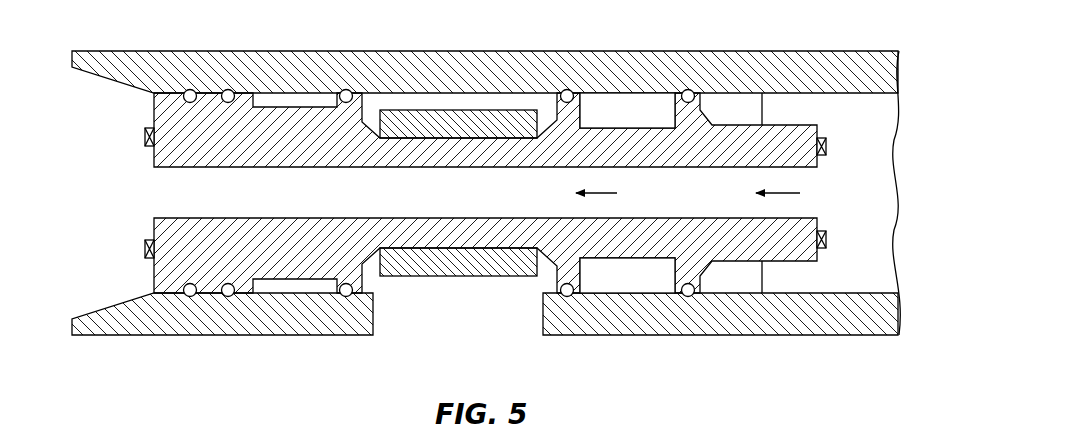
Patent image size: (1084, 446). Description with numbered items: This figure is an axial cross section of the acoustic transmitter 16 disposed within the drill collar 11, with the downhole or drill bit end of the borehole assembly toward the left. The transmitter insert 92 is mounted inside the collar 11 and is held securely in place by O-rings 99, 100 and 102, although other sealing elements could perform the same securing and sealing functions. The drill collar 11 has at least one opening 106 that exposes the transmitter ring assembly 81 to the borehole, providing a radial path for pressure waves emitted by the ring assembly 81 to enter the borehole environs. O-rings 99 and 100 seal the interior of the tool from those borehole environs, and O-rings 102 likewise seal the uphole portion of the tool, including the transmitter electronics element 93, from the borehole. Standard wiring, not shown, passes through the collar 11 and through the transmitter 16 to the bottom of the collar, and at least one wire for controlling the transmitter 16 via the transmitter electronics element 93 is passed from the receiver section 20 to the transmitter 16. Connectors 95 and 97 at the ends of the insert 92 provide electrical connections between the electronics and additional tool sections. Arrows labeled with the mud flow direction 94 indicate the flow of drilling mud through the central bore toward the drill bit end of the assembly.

The drill collar 11 is at (425, 51).
The transmitter 16 is at (125, 177).
The receiver section 20 is at (780, 102).
The transmitter ring assembly 81 is at (428, 258).
The transmitter insert 92 is at (210, 168).
The transmitter electronics element 93 is at (642, 93).
The mud flow direction arrow 94 is at (336, 198).
The connector 95 is at (820, 156).
The connector 97 is at (146, 136).
The O-rings 99 is at (228, 91).
The O-rings 100 is at (346, 91).
The O-rings 102 is at (567, 91).
The opening 106 is at (457, 315).